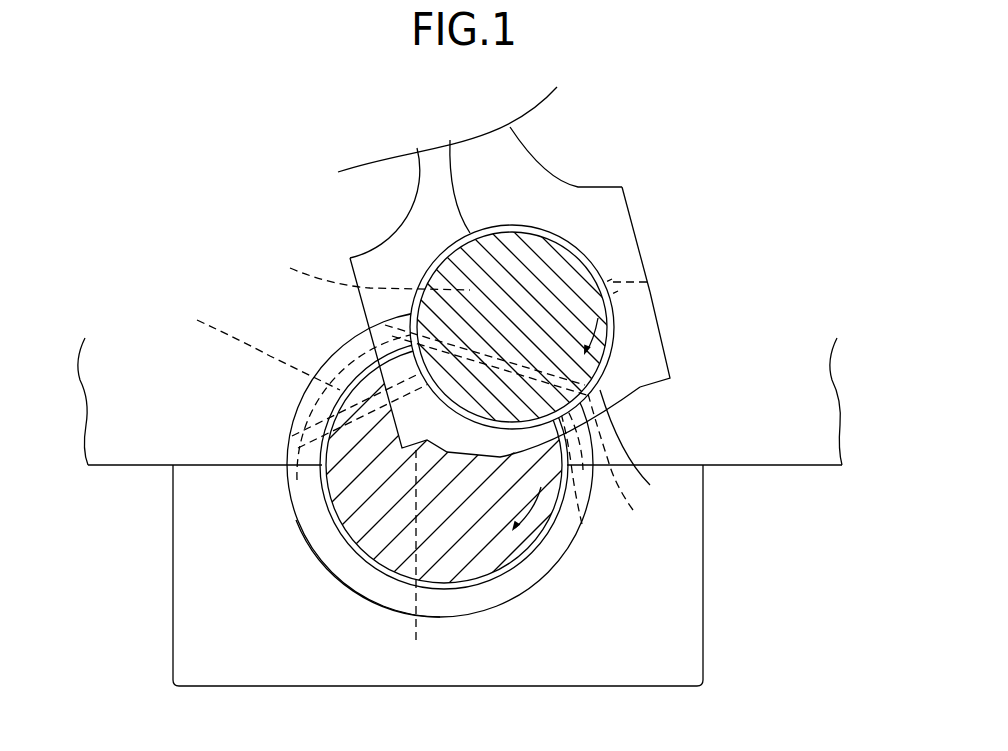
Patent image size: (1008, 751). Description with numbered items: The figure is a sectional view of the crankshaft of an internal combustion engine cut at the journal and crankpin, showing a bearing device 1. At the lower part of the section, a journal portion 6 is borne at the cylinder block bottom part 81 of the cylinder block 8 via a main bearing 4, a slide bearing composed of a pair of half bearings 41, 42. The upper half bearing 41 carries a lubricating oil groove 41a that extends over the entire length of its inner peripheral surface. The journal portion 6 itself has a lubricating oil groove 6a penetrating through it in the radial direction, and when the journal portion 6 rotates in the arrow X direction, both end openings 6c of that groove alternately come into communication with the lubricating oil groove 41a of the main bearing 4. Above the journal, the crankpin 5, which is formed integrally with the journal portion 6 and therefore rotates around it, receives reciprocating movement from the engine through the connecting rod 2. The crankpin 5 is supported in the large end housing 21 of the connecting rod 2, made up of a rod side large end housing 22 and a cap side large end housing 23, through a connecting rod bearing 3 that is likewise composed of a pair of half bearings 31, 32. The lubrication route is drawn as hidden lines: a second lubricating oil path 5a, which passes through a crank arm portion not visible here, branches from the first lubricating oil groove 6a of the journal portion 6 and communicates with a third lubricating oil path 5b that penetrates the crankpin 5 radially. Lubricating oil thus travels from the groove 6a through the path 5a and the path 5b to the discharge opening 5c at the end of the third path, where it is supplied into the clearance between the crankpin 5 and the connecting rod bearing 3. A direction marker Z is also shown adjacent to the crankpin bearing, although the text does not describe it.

The bearing device 1 is at (168, 196).
The connecting rod 2 is at (417, 178).
The large end housing 21 is at (645, 207).
The rod side large end housing 22 is at (642, 253).
The cap side large end housing 23 is at (660, 330).
The connecting rod bearing 3 is at (628, 345).
The half bearing 31 is at (450, 140).
The half bearing 32 is at (640, 447).
The main bearing 4 is at (360, 464).
The half bearing 41 is at (297, 410).
The lubricating oil groove 41a is at (292, 443).
The half bearing 42 is at (294, 518).
The crankpin 5 is at (535, 257).
The second lubricating oil path 5a is at (251, 346).
The third lubricating oil path 5b is at (363, 271).
The discharge opening 5c is at (650, 282).
The journal portion 6 is at (362, 535).
The lubricating oil groove 6a is at (416, 562).
The end openings 6c is at (300, 510).
The cylinder block 8 is at (810, 500).
The cylinder block bottom part 81 is at (753, 453).
The arrow X direction X is at (530, 512).
The direction Z is at (612, 352).